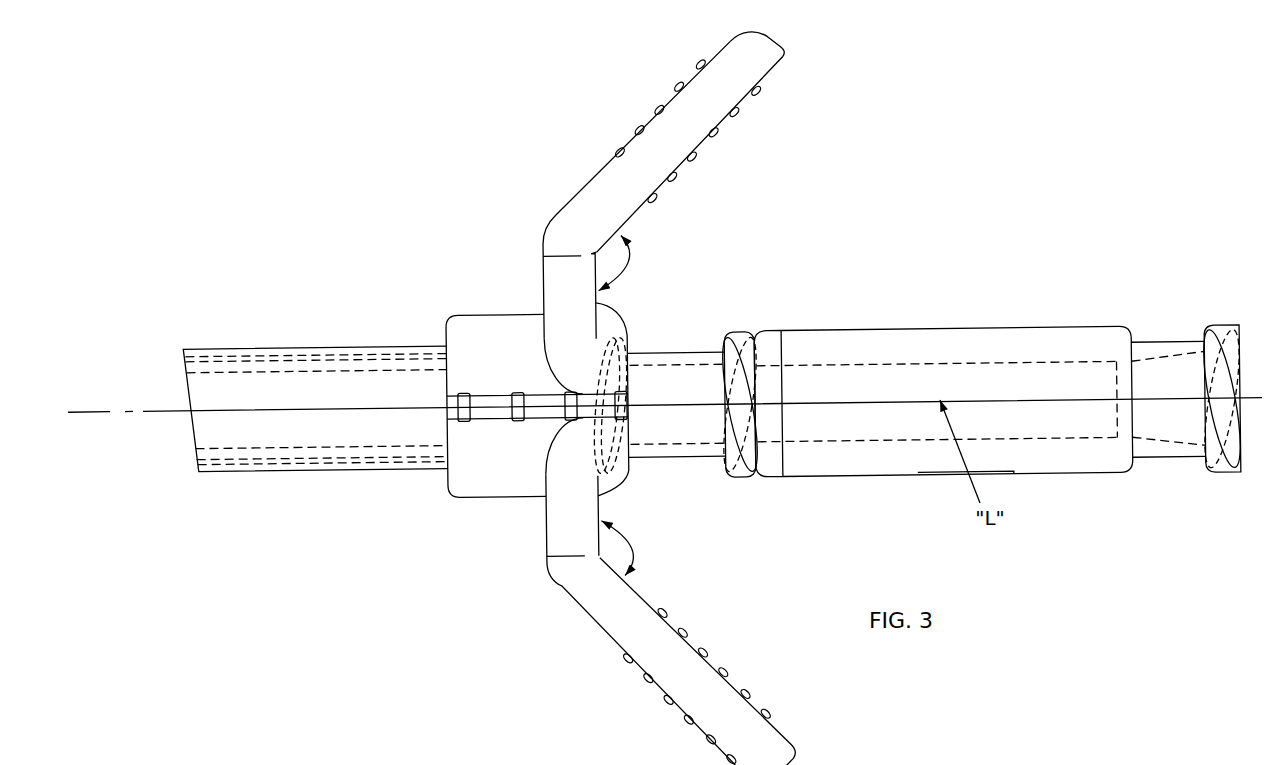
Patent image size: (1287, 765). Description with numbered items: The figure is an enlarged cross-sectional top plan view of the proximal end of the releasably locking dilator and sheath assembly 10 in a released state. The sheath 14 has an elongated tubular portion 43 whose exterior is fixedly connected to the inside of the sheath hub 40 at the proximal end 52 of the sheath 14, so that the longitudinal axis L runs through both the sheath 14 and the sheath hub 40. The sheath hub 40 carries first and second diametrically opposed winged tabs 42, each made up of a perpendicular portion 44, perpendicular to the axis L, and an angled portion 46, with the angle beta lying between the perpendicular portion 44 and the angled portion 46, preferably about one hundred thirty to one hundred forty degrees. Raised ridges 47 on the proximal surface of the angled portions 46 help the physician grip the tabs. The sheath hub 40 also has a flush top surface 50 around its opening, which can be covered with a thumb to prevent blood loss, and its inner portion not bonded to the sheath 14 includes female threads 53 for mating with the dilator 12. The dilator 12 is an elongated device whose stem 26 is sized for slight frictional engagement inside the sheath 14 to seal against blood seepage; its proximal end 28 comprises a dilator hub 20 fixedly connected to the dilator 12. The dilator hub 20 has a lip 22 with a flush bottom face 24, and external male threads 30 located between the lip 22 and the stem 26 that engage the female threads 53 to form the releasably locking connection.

The releasably locking dilator and sheath assembly 10 is at (903, 148).
The dilator 12 is at (828, 295).
The sheath 14 is at (380, 270).
The dilator hub 20 is at (1047, 325).
The lip 22 is at (763, 455).
The bottom face 24 is at (760, 480).
The stem 26 is at (348, 447).
The proximal end 28 is at (705, 343).
The external male threads 30 is at (742, 325).
The sheath hub 40 is at (490, 497).
The winged tabs 42 is at (530, 238).
The tubular portion 43 is at (355, 345).
The perpendicular portion 44 is at (537, 290).
The angled portion 46 is at (750, 103).
The raised ridges 47 is at (707, 157).
The top surface 50 is at (633, 495).
The proximal end 52 is at (423, 482).
The female threads 53 is at (605, 337).